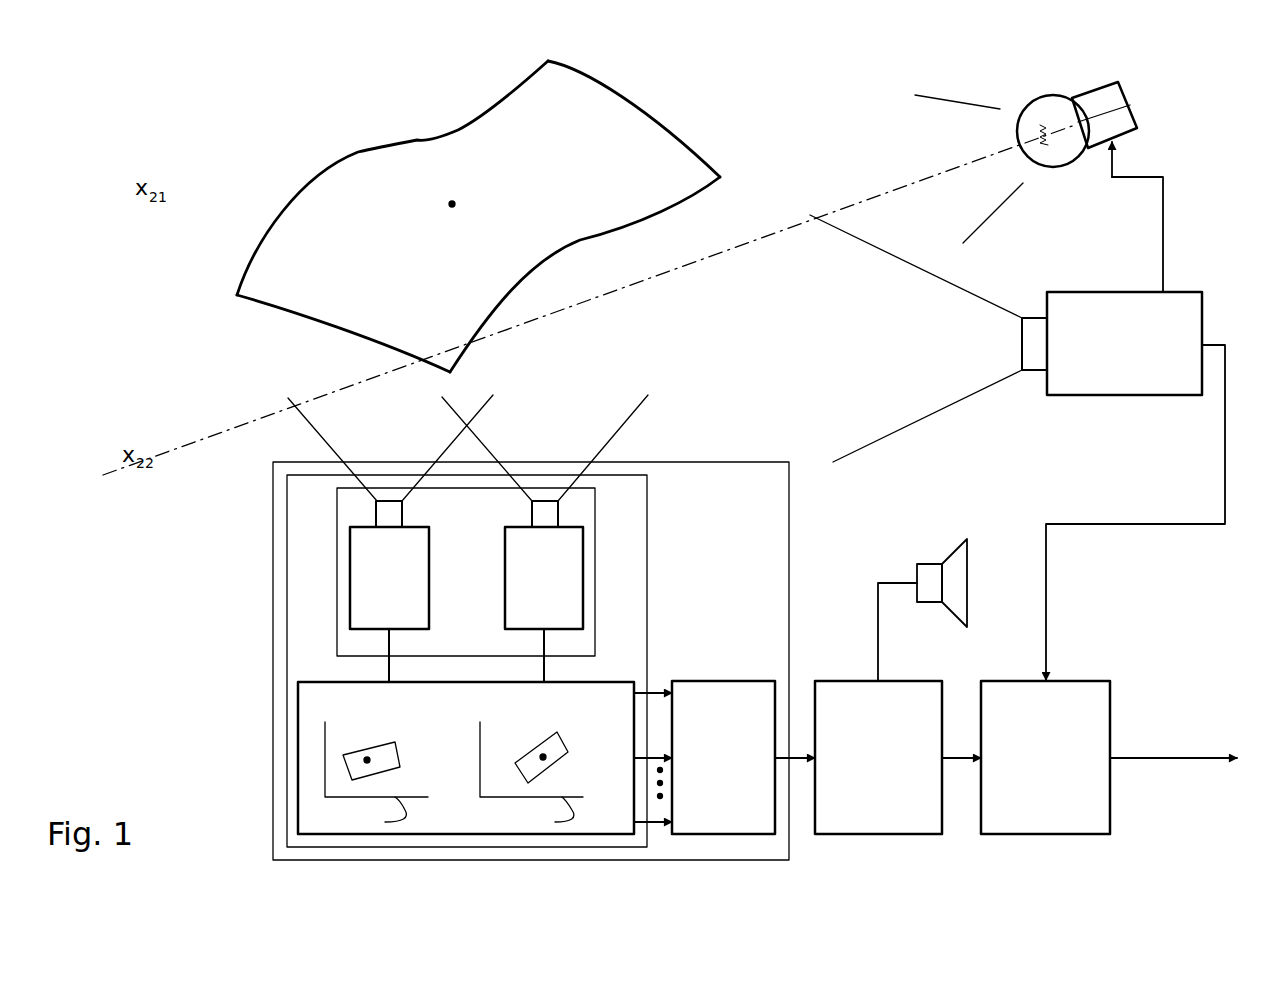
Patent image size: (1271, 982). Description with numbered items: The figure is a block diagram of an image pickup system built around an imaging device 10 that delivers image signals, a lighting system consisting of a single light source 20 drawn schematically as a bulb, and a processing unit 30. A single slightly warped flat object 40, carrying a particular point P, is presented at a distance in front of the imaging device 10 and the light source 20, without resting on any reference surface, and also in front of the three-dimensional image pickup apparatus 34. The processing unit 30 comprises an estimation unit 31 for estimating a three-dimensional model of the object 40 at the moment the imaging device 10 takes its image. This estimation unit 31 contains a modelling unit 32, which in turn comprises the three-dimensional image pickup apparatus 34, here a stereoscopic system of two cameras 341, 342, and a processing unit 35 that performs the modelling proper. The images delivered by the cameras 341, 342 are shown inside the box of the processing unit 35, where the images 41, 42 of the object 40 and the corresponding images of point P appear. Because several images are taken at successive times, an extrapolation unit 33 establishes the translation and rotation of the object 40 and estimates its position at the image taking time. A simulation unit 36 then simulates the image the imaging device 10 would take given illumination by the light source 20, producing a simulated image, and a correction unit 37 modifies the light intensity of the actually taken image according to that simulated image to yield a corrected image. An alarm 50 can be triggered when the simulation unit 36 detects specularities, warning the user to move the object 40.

The imaging device 10 is at (1080, 292).
The light source 20 is at (1137, 110).
The processing unit 30 is at (262, 850).
The estimation unit 31 is at (789, 616).
The modelling unit 32 is at (647, 606).
The extrapolation unit 33 is at (743, 757).
The 3D image pickup apparatus 34 is at (337, 613).
The camera 341 is at (429, 562).
The camera 342 is at (583, 563).
The processing unit 35 is at (298, 803).
The simulation unit 36 is at (898, 757).
The correction unit 37 is at (1109, 757).
The object 40 is at (460, 128).
The image of the object 41 is at (400, 755).
The image of the object 42 is at (570, 747).
The alarm 50 is at (940, 562).